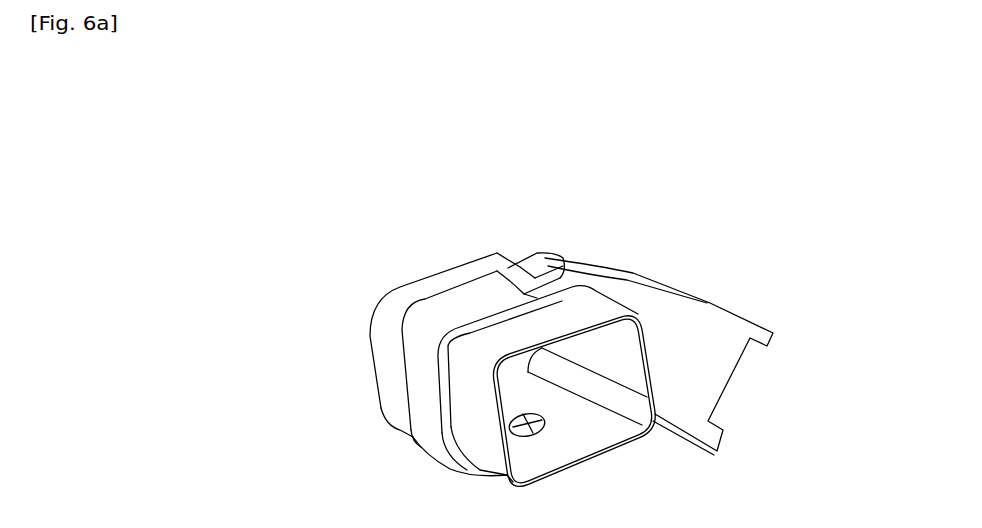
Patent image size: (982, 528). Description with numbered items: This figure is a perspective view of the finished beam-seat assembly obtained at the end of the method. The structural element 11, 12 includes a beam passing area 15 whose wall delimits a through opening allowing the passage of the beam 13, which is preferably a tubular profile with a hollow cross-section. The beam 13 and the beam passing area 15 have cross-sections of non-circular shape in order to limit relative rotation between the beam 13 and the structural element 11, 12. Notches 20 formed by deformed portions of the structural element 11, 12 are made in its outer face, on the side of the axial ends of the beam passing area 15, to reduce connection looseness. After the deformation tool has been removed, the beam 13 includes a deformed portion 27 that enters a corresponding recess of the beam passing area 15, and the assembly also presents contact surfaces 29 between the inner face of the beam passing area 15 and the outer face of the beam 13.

The structural element 11 is at (693, 312).
The structural element 12 is at (680, 273).
The beam 13 is at (400, 290).
The beam passing area 15 is at (428, 387).
The notches 20 is at (567, 275).
The deformed portion 27 is at (533, 433).
The contact surfaces 29 is at (513, 266).